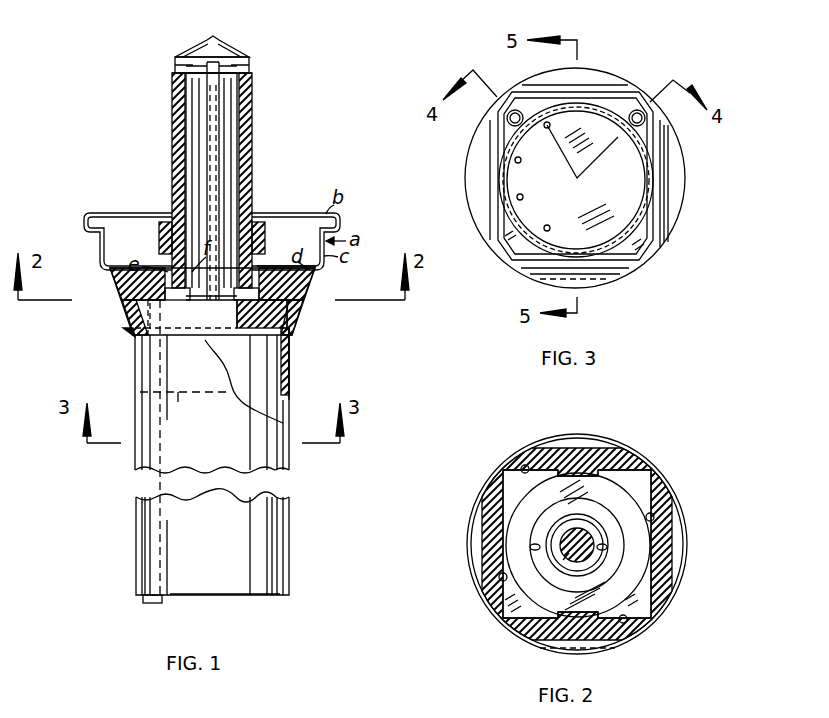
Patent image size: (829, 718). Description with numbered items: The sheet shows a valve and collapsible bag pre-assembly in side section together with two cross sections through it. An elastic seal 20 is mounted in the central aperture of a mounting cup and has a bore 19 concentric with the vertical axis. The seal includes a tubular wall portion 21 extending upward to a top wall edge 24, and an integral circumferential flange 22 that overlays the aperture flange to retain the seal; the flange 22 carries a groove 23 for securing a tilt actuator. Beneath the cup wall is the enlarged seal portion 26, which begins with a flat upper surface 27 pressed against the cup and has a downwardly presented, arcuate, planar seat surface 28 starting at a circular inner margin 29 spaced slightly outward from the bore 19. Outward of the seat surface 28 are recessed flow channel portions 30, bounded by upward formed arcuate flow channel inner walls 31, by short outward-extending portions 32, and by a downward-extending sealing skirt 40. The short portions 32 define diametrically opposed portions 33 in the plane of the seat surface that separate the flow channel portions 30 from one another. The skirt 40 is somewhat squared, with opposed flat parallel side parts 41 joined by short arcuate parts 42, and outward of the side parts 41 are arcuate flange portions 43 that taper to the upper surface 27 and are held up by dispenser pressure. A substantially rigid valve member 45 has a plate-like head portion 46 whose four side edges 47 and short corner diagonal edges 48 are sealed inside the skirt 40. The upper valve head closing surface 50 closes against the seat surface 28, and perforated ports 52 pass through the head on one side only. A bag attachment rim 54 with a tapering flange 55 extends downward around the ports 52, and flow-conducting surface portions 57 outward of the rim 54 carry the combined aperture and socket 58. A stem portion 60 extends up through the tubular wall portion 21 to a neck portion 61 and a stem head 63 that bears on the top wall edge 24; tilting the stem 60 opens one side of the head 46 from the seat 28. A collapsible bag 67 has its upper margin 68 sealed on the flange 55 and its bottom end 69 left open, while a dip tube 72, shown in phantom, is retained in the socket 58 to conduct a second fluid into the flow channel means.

In FIG. 1, the bore 19 is at (240, 131).
In FIG. 2, the bore 19 is at (605, 548).
In FIG. 1, the elastic seal 20 is at (258, 166).
In FIG. 1, the tubular wall portion 21 is at (178, 141).
In FIG. 1, the circumferential flange 22 is at (167, 213).
In FIG. 1, the groove 23 is at (160, 240).
In FIG. 1, the top wall edge 24 is at (246, 66).
In FIG. 1, the enlarged seal portion 26 is at (322, 291).
In FIG. 1, the flat upper surface 27 is at (318, 270).
In FIG. 1, the seat surface 28 is at (276, 316).
In FIG. 2, the seat surface 28 is at (622, 570).
In FIG. 1, the circular inner margin 29 is at (262, 322).
In FIG. 2, the circular inner margin 29 is at (532, 548).
In FIG. 1, the flow channel portions 30 is at (126, 292).
In FIG. 2, the flow channel portions 30 is at (505, 482).
In FIG. 1, the arcuate flow channel inner walls 31 is at (132, 310).
In FIG. 2, the arcuate flow channel inner walls 31 is at (630, 591).
In FIG. 2, the short outward-extending portions 32 is at (537, 452).
In FIG. 2, the diametrically opposed portions 33 is at (596, 468).
In FIG. 1, the sealing skirt 40 is at (135, 340).
In FIG. 3, the sealing skirt 40 is at (665, 178).
In FIG. 2, the sealing skirt 40 is at (484, 509).
In FIG. 2, the flat parallel side parts 41 is at (520, 466).
In FIG. 2, the short arcuate parts 42 is at (662, 472).
In FIG. 2, the arcuate flange portions 43 is at (573, 440).
In FIG. 1, the valve member 45 is at (205, 296).
In FIG. 2, the valve member 45 is at (567, 557).
In FIG. 1, the head portion 46 is at (165, 331).
In FIG. 1, the side edges 47 is at (292, 322).
In FIG. 3, the side edges 47 is at (655, 232).
In FIG. 3, the corner diagonal edges 48 is at (660, 112).
In FIG. 1, the valve head closing surface 50 is at (168, 300).
In FIG. 3, the perforated ports 52 is at (548, 226).
In FIG. 1, the bag attachment rim 54 is at (284, 360).
In FIG. 1, the tapering flange 55 is at (291, 373).
In FIG. 1, the flow-conducting surface portions 57 is at (125, 331).
In FIG. 3, the aperture and socket 58 is at (516, 110).
In FIG. 1, the stem portion 60 is at (205, 100).
In FIG. 2, the stem portion 60 is at (581, 538).
In FIG. 1, the neck portion 61 is at (224, 92).
In FIG. 1, the stem head 63 is at (236, 50).
In FIG. 1, the collapsible bag 67 is at (276, 543).
In FIG. 1, the upper margin 68 is at (184, 405).
In FIG. 1, the bottom end 69 is at (244, 596).
In FIG. 1, the dip tube 72 is at (141, 515).